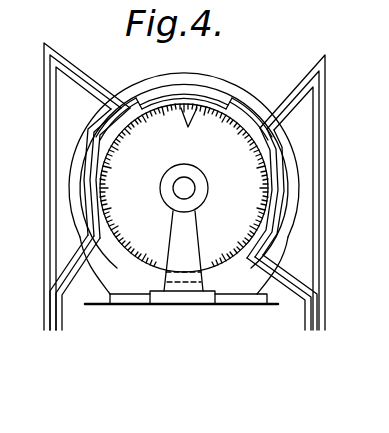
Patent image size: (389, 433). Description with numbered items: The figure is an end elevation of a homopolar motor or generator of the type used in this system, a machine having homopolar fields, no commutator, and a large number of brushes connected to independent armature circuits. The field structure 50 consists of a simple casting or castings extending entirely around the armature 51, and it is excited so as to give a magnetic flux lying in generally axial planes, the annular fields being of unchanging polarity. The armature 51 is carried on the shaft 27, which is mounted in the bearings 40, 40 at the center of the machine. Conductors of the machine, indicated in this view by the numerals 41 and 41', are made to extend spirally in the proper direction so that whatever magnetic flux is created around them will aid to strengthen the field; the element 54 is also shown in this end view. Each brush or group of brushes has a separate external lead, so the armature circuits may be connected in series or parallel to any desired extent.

The shaft 27 is at (197, 198).
The bearings 40 is at (168, 200).
The spring bracket 41 is at (211, 173).
The spring arms 41' is at (208, 207).
The field structure 50 is at (240, 97).
The armature 51 is at (268, 150).
The index pointer 54 is at (188, 124).